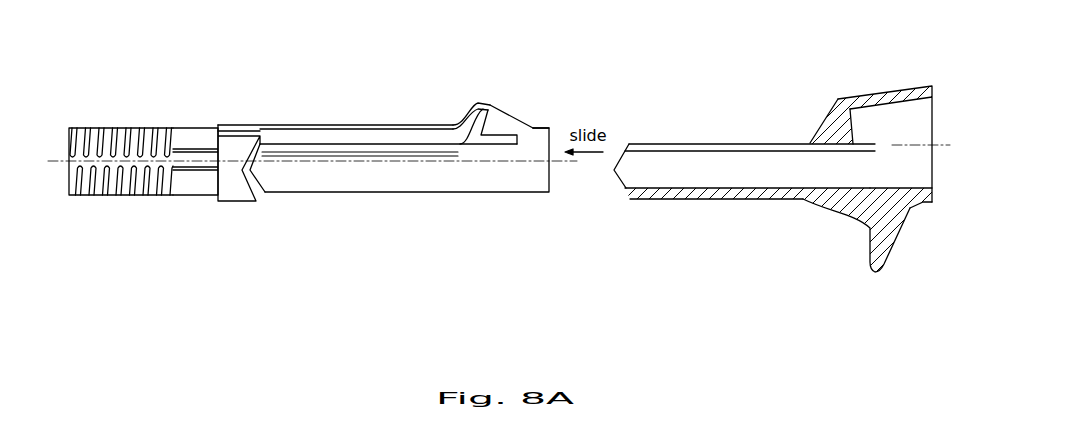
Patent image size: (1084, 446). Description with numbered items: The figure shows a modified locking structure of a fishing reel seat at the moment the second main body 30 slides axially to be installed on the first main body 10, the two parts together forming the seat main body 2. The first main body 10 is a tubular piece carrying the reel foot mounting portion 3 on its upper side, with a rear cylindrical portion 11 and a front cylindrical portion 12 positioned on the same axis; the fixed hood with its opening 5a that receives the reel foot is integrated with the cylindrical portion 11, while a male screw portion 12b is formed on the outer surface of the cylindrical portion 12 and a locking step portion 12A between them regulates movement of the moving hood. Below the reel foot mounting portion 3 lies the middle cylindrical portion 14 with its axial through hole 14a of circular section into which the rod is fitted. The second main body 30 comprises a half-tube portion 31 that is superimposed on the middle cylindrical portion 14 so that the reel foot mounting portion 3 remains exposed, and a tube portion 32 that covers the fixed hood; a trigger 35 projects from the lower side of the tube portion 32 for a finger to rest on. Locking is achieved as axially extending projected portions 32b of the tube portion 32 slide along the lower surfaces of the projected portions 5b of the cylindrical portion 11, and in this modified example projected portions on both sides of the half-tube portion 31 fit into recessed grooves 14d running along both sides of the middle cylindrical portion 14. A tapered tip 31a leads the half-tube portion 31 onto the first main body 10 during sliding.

The first main body 10 is at (297, 213).
The male screw portion 12b is at (88, 127).
The cylindrical portion 12 is at (185, 128).
The locking step portion 12A is at (234, 196).
The through hole 14a is at (268, 177).
The middle cylindrical portion 14 is at (350, 172).
The recessed grooves 14d is at (408, 152).
The seat main body 2 is at (252, 112).
The reel foot mounting portion 3 is at (343, 123).
The opening 5a is at (462, 121).
The projected portions 5b is at (493, 136).
The cylindrical portion 11 is at (537, 127).
The tapered tip of tube 31a is at (621, 152).
The half-tube portion 31 is at (713, 195).
The second main body 30 is at (893, 77).
The projected portions 32b is at (838, 131).
The tube portion 32 is at (923, 204).
The trigger 35 is at (884, 266).